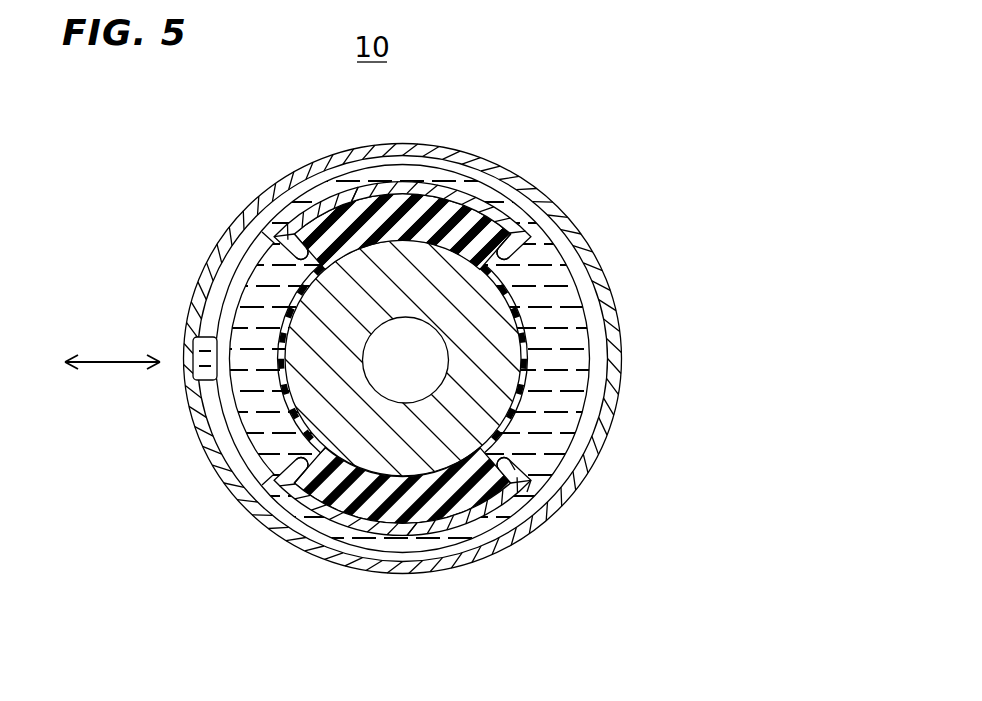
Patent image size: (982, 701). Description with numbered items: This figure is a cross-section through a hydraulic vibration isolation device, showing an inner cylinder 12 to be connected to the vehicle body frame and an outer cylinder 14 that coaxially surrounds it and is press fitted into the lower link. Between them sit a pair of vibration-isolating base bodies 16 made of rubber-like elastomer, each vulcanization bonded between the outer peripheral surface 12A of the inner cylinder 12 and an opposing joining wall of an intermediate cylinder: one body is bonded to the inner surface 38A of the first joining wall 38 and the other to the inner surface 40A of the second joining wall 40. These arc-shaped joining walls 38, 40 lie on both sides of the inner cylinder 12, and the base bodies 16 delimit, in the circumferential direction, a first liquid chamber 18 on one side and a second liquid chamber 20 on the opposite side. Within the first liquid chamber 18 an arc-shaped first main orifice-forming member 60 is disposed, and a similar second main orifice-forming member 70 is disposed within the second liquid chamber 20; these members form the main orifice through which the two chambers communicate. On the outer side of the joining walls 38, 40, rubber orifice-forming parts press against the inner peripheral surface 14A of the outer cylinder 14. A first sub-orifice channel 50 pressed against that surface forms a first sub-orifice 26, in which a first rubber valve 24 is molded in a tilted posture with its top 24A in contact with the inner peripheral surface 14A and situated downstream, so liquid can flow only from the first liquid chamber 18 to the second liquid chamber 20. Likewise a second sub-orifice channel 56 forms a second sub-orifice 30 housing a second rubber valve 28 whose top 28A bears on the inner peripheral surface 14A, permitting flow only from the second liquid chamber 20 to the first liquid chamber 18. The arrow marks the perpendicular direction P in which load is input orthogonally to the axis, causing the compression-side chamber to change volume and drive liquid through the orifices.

The inner cylinder 12 is at (503, 385).
The outer peripheral surface of the inner cylinder 12A is at (503, 292).
The outer cylinder 14 is at (528, 492).
The inner peripheral surface of the outer cylinder 14A is at (515, 505).
The vibration-isolating base body 16 is at (503, 236).
The first liquid chamber 18 is at (562, 320).
The second liquid chamber 20 is at (247, 430).
The first rubber valve 24 is at (440, 190).
The top of the first rubber valve 24A is at (408, 178).
The first sub-orifice 26 is at (362, 170).
The second rubber valve 28 is at (348, 546).
The top of the second rubber valve 28A is at (407, 567).
The second sub-orifice 30 is at (418, 552).
The first joining wall 38 is at (303, 213).
The inner surface of the first joining wall 38A is at (293, 248).
The second joining wall 40 is at (313, 522).
The inner surface of the second joining wall 40A is at (297, 490).
The first sub-orifice channel 50 is at (487, 203).
The second sub-orifice channel 56 is at (440, 527).
The first main orifice-forming member 60 is at (578, 432).
The second main orifice-forming member 70 is at (205, 382).
The perpendicular direction P is at (117, 355).